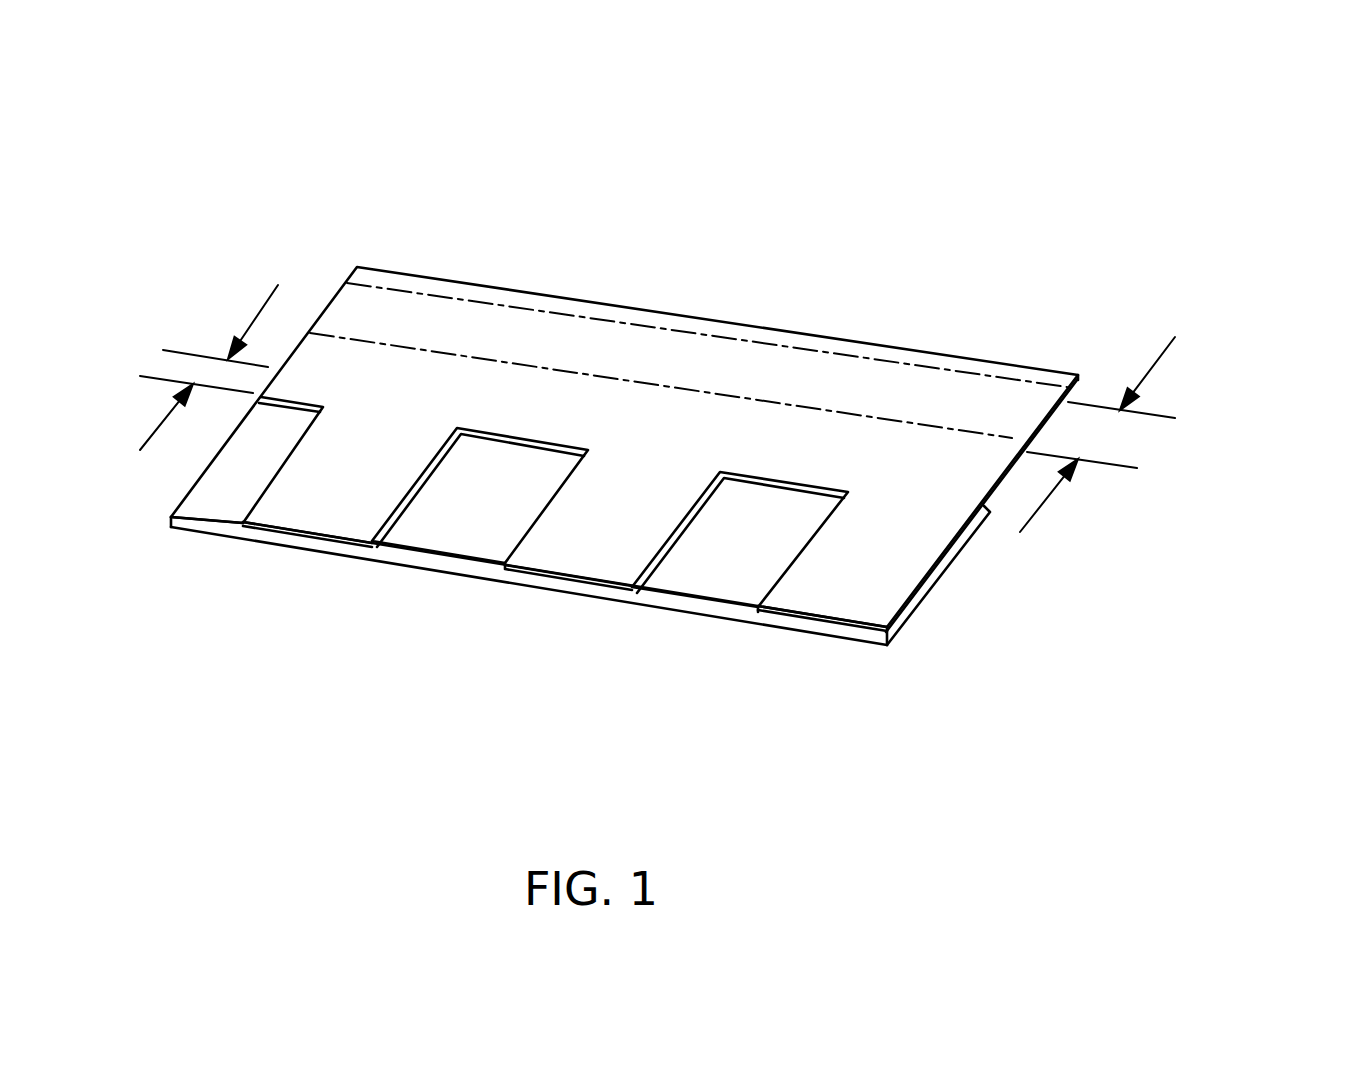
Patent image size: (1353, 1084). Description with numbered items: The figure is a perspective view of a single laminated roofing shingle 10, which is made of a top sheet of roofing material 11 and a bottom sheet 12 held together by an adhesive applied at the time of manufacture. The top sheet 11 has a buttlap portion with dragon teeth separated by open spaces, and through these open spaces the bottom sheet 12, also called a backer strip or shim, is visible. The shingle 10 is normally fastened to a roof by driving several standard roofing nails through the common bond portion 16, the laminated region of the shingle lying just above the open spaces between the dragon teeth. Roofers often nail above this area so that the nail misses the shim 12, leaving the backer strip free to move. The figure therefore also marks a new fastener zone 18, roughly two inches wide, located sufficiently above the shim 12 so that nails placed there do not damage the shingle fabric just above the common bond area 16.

The laminated roofing shingle 10 is at (746, 226).
The top sheet of roofing material 11 is at (1080, 377).
The bottom sheet 12 is at (947, 572).
The common bond portion 16 is at (112, 351).
The new fastener zone 18 is at (1190, 449).